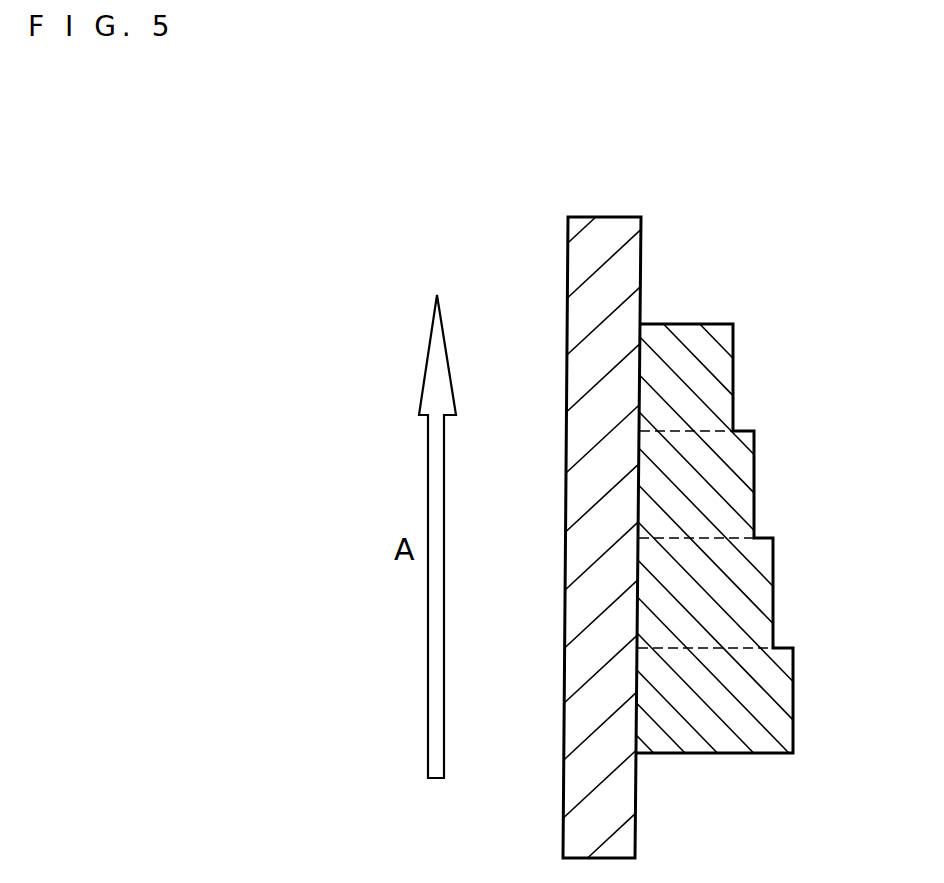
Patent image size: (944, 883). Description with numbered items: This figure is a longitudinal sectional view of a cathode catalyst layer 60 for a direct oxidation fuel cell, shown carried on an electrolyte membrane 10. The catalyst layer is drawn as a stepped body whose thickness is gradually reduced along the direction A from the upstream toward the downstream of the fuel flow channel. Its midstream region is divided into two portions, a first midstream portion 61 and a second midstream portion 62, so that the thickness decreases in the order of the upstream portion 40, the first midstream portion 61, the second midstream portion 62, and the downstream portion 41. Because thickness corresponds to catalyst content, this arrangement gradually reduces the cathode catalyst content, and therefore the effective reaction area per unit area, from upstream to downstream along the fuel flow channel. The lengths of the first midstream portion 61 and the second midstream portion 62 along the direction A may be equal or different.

The electrolyte membrane 10 is at (625, 257).
The cathode catalyst layer 60 is at (721, 312).
The downstream portion 41 is at (714, 388).
The second midstream portion 62 is at (732, 498).
The first midstream portion 61 is at (745, 603).
The upstream portion 40 is at (765, 713).